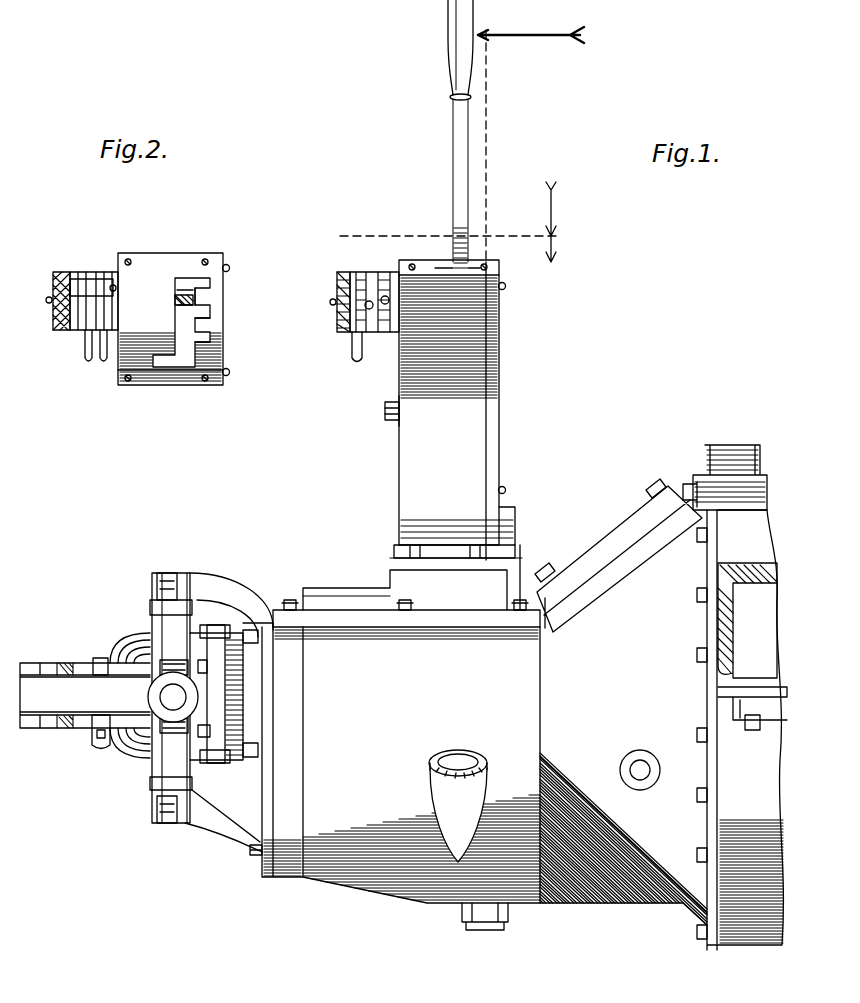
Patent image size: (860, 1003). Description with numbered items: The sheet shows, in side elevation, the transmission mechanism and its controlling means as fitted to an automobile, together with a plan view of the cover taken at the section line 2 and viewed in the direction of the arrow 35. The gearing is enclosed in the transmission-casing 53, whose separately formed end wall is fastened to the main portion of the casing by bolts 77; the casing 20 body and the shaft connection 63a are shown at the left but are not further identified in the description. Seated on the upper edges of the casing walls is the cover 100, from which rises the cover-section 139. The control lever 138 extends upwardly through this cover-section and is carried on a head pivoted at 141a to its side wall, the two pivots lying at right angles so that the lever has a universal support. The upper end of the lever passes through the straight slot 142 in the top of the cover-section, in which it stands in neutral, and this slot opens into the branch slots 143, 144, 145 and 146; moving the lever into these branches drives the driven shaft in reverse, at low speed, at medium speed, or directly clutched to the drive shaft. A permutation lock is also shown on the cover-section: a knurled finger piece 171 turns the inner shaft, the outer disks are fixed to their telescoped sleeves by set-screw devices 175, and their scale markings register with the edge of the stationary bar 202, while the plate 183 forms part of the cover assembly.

In FIG. 1, the transmission housing 20 is at (395, 875).
In FIG. 1, the transmission-casing 53 is at (328, 868).
In FIG. 1, the bolts 77 is at (248, 760).
In FIG. 1, the input shaft 63a is at (82, 665).
In FIG. 1, the cover 100 is at (342, 598).
In FIG. 1, the cover-section 139 is at (454, 410).
In FIG. 2, the cover-section 139 is at (146, 384).
In FIG. 1, the control lever 138 is at (456, 186).
In FIG. 2, the control lever 138 is at (158, 295).
In FIG. 1, the cover plate 183 is at (498, 262).
In FIG. 2, the cover plate 183 is at (140, 260).
In FIG. 1, the knurled finger piece 171 is at (344, 268).
In FIG. 2, the knurled finger piece 171 is at (56, 292).
In FIG. 1, the set-screw devices 175 is at (385, 296).
In FIG. 2, the set-screw devices 175 is at (102, 362).
In FIG. 1, the pivot 141a is at (385, 410).
In FIG. 1, the direction arrow 35 is at (529, 24).
In FIG. 1, the section line 2 is at (459, 222).
In FIG. 2, the slot 142 is at (183, 282).
In FIG. 2, the branch slot 143 is at (197, 283).
In FIG. 2, the branch slot 144 is at (212, 310).
In FIG. 2, the branch slot 145 is at (207, 338).
In FIG. 2, the branch slot 146 is at (165, 364).
In FIG. 2, the stationary bar 202 is at (84, 285).